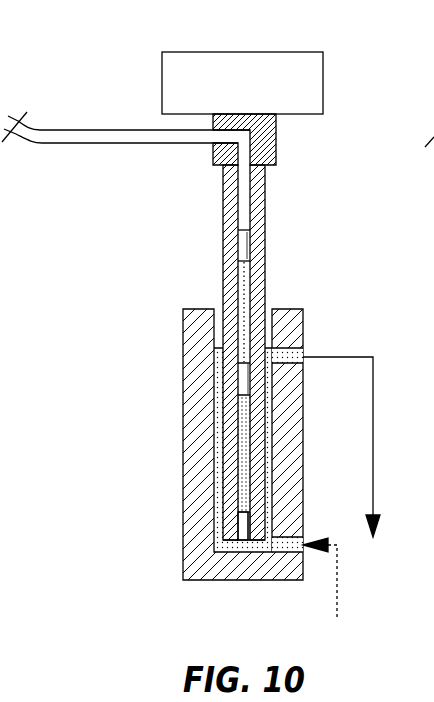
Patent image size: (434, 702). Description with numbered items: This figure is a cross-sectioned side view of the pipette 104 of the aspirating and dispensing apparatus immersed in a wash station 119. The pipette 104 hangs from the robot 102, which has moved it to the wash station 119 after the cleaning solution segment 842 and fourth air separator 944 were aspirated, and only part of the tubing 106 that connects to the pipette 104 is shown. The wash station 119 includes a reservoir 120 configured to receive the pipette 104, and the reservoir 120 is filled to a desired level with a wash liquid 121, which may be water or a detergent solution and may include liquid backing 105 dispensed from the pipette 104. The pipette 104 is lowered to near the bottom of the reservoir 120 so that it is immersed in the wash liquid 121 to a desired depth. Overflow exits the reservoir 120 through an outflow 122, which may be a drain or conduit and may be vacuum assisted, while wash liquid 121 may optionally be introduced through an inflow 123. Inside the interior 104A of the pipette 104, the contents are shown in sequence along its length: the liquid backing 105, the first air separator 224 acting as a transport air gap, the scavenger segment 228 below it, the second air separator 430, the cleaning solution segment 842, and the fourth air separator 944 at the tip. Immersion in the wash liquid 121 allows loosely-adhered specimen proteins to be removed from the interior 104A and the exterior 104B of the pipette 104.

The robot 102 is at (280, 52).
The pipette 104 is at (282, 189).
The interior of the pipette 104A is at (238, 204).
The exterior of the pipette 104B is at (223, 180).
The liquid backing 105 is at (244, 218).
The tubing 106 is at (100, 143).
The wash station 119 is at (297, 288).
The reservoir 120 is at (223, 472).
The wash liquid 121 is at (268, 415).
The outflow 122 is at (372, 434).
The inflow 123 is at (337, 605).
The first air separator 224 is at (244, 243).
The scavenger segment 228 is at (244, 287).
The second air separator 430 is at (243, 378).
The cleaning solution segment 842 is at (243, 435).
The fourth air separator 944 is at (246, 530).